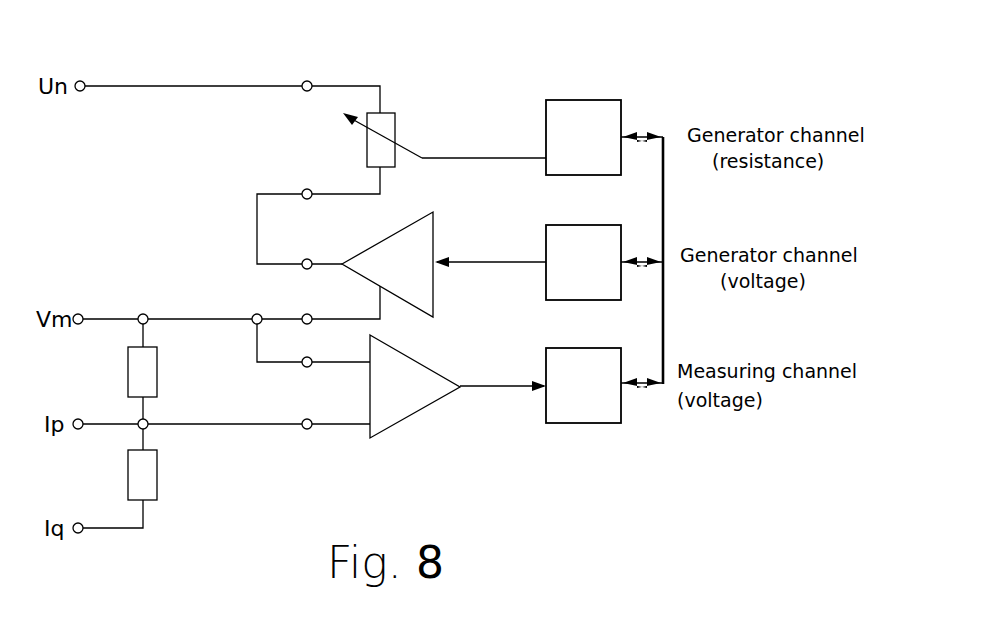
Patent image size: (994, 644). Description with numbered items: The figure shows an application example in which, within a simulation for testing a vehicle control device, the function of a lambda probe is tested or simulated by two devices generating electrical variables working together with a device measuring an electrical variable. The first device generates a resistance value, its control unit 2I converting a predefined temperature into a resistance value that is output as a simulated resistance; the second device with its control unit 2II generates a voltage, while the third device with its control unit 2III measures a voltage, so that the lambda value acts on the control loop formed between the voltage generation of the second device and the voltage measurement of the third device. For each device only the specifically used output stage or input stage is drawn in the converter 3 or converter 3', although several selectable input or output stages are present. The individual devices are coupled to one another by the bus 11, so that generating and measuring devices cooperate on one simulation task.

The converter 3 is at (458, 374).
The converter 3' is at (444, 188).
The control unit of device I 2I is at (583, 123).
The control unit of device II 2II is at (583, 248).
The control unit of device III 2III is at (583, 371).
The bus 11 is at (663, 318).